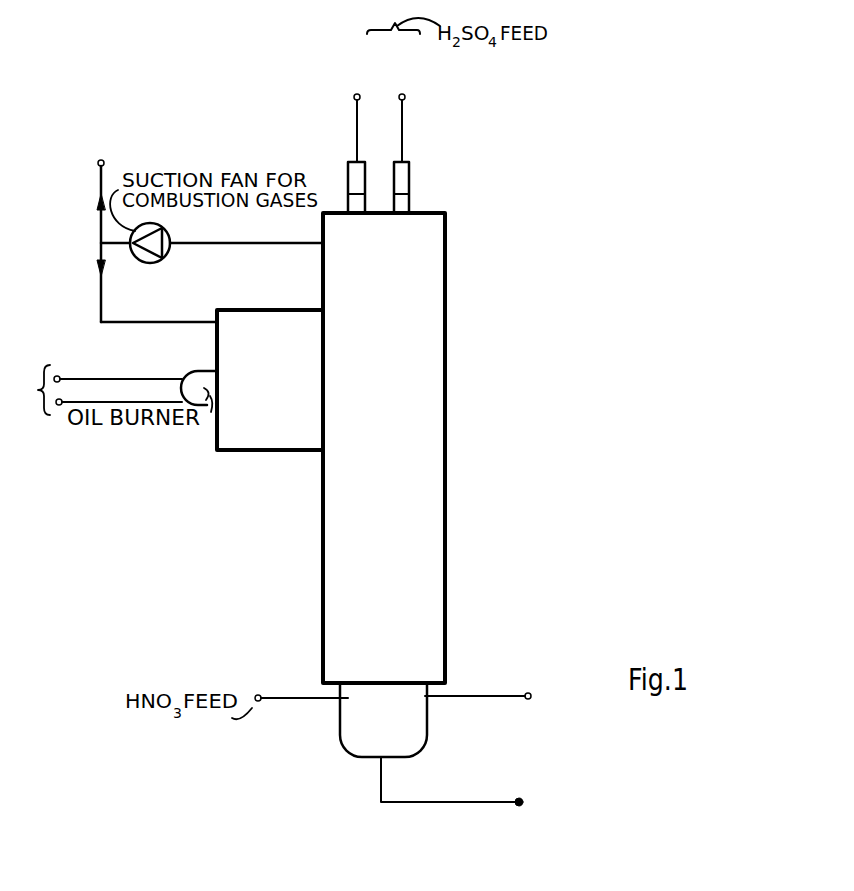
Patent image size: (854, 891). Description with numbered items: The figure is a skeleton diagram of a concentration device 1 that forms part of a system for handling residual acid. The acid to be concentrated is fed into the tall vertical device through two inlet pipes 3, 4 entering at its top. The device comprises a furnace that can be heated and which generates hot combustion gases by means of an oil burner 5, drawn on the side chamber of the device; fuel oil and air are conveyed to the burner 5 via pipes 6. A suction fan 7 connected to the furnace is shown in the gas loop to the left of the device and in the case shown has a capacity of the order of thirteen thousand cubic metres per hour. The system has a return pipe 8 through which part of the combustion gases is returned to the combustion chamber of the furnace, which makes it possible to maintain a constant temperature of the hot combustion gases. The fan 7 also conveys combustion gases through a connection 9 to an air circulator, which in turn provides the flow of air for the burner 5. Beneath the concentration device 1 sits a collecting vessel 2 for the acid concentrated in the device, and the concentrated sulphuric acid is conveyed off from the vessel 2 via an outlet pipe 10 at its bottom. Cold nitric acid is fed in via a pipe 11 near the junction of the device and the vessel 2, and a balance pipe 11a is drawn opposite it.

The concentration device 1 is at (435, 506).
The collecting vessel 2 is at (416, 731).
The inlet pipe 3 is at (403, 93).
The inlet pipe 4 is at (359, 93).
The oil burner 5 is at (187, 372).
The pipes 6 is at (42, 373).
The suction fan 7 is at (168, 253).
The return pipe 8 is at (198, 320).
The connection 9 is at (103, 158).
The outlet pipe 10 is at (519, 802).
The pipe 11 is at (268, 693).
The balance pipe 11a is at (498, 683).